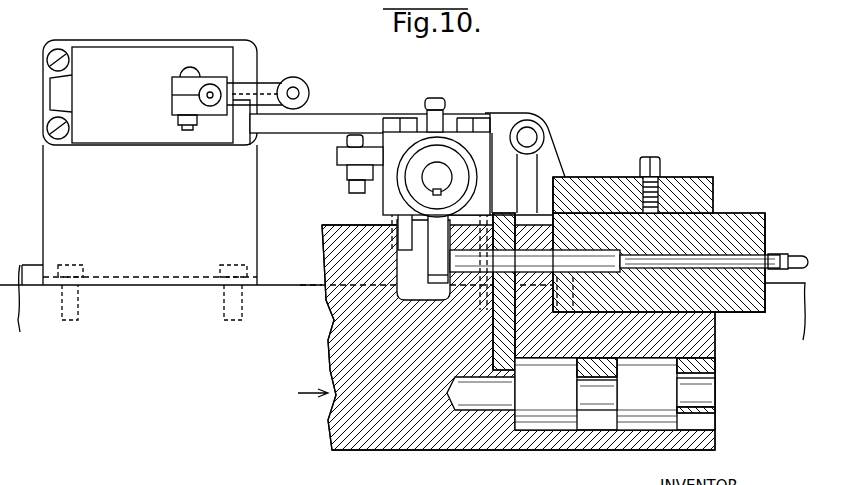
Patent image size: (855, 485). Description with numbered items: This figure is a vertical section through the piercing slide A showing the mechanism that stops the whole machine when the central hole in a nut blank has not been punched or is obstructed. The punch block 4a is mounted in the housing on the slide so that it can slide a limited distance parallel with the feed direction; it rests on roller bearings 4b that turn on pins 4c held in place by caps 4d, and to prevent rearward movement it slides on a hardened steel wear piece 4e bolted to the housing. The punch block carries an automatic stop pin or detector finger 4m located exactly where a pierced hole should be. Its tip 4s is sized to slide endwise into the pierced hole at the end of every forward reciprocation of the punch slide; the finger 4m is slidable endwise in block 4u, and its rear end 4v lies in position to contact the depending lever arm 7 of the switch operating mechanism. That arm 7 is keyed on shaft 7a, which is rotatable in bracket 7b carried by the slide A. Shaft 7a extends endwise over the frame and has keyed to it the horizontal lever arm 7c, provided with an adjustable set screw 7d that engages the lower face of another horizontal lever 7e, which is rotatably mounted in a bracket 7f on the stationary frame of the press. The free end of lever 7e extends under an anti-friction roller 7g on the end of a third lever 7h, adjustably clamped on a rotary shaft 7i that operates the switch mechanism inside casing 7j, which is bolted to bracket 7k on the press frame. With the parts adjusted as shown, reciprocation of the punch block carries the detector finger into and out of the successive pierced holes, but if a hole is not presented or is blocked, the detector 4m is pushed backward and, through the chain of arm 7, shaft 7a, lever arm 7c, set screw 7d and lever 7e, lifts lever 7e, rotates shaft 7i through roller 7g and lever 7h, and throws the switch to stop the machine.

The depending lever arm 7 is at (433, 250).
The shaft 7a is at (432, 177).
The bracket 7b is at (400, 190).
The horizontal lever arm 7c is at (340, 153).
The adjustable set screw 7d is at (345, 185).
The horizontal lever 7e is at (335, 118).
The bracket 7f is at (547, 160).
The anti-friction roller 7g is at (308, 85).
The third lever 7h is at (270, 80).
The rotary shaft 7i is at (210, 106).
The casing 7j is at (110, 150).
The bracket 7k is at (233, 218).
The punch block 4a is at (708, 336).
The roller bearings 4b is at (630, 415).
The pins 4c is at (705, 388).
The caps 4d is at (605, 366).
The hardened steel wear piece 4e is at (505, 362).
The automatic stop pin 4m is at (777, 250).
The tip 4s is at (800, 260).
The block 4u is at (737, 212).
The rear end 4v is at (400, 286).
The piercing slide A is at (302, 394).